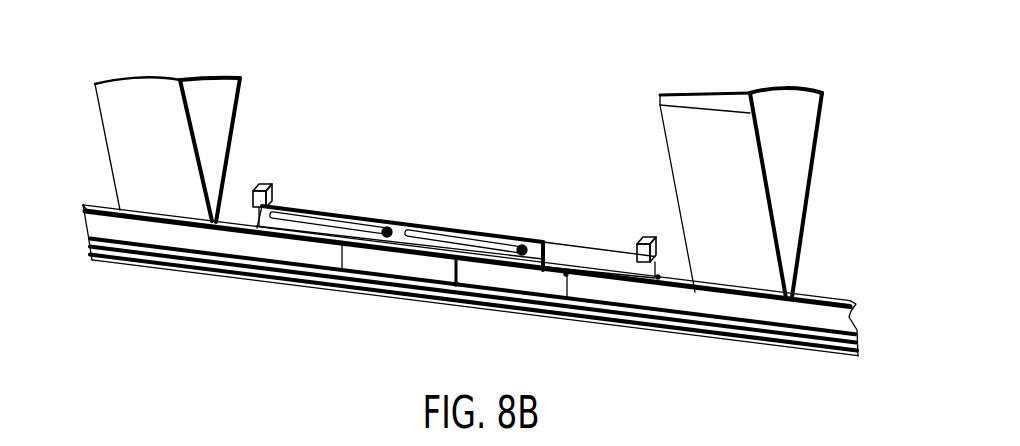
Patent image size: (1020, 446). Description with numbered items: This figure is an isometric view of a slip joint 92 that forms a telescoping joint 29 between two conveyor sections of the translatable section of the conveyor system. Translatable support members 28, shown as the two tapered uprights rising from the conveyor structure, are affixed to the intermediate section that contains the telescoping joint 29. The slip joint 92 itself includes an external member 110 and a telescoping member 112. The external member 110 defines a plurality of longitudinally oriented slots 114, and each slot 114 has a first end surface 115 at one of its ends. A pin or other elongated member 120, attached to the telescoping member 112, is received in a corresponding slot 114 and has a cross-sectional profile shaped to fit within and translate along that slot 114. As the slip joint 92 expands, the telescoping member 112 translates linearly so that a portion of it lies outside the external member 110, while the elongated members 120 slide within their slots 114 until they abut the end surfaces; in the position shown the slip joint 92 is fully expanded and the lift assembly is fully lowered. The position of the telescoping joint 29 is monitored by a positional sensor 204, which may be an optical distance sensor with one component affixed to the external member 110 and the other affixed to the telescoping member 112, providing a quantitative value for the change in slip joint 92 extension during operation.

The translatable support member 28 is at (115, 150).
The telescoping joint 29 is at (481, 96).
The slip joint 92 is at (496, 197).
The external member 110 is at (335, 215).
The telescoping member 112 is at (556, 241).
The slot 114 is at (311, 222).
The first end surface 115 is at (413, 232).
The elongated member 120 is at (389, 227).
The positional sensor 204 is at (264, 182).